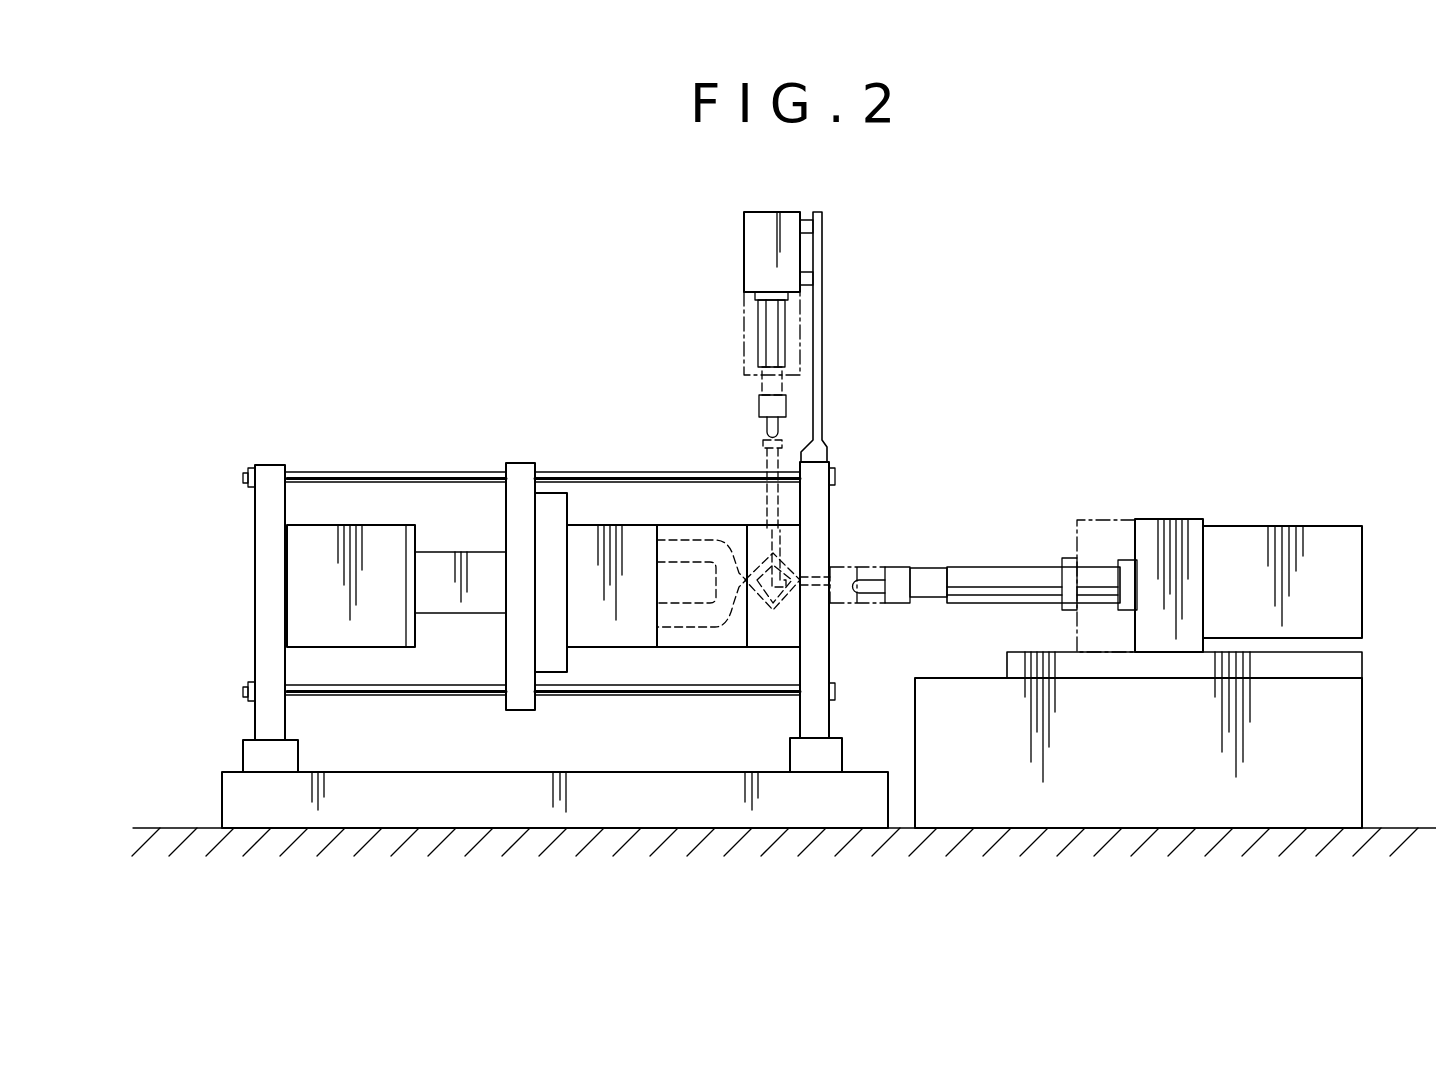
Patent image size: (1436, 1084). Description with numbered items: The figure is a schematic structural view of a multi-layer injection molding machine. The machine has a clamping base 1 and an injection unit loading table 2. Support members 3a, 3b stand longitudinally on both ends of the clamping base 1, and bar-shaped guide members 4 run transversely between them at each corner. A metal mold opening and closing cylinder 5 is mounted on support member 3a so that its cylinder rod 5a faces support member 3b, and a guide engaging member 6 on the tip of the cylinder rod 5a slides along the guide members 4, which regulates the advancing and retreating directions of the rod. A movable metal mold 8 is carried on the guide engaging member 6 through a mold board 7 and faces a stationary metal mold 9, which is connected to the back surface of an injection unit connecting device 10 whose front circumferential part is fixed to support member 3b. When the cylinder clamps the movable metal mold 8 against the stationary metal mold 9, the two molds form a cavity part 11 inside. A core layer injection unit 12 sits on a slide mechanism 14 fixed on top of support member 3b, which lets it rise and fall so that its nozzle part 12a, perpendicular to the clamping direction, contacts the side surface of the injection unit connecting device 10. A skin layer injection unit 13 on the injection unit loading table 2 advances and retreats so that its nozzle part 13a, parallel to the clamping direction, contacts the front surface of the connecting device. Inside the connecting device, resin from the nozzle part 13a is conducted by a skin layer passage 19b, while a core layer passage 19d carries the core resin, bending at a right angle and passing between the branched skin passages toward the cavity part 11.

The clamping base 1 is at (230, 785).
The injection unit loading table 2 is at (1345, 714).
The support member 3a is at (268, 548).
The support member 3b is at (820, 666).
The guide member 4 is at (388, 471).
The metal mold opening and closing cylinder 5 is at (296, 610).
The cylinder rod 5a is at (460, 614).
The guide engaging member 6 is at (521, 465).
The mold board 7 is at (553, 495).
The movable metal mold 8 is at (622, 527).
The stationary metal mold 9 is at (689, 527).
The injection unit connecting device 10 is at (773, 648).
The cavity part 11 is at (683, 623).
The core layer injection unit 12 is at (744, 250).
The nozzle part 12a is at (773, 528).
The skin layer injection unit 13 is at (1294, 524).
The nozzle part 13a is at (812, 598).
The slide mechanism 14 is at (824, 250).
The skin layer passage 19b is at (797, 571).
The core layer passage 19d is at (782, 540).